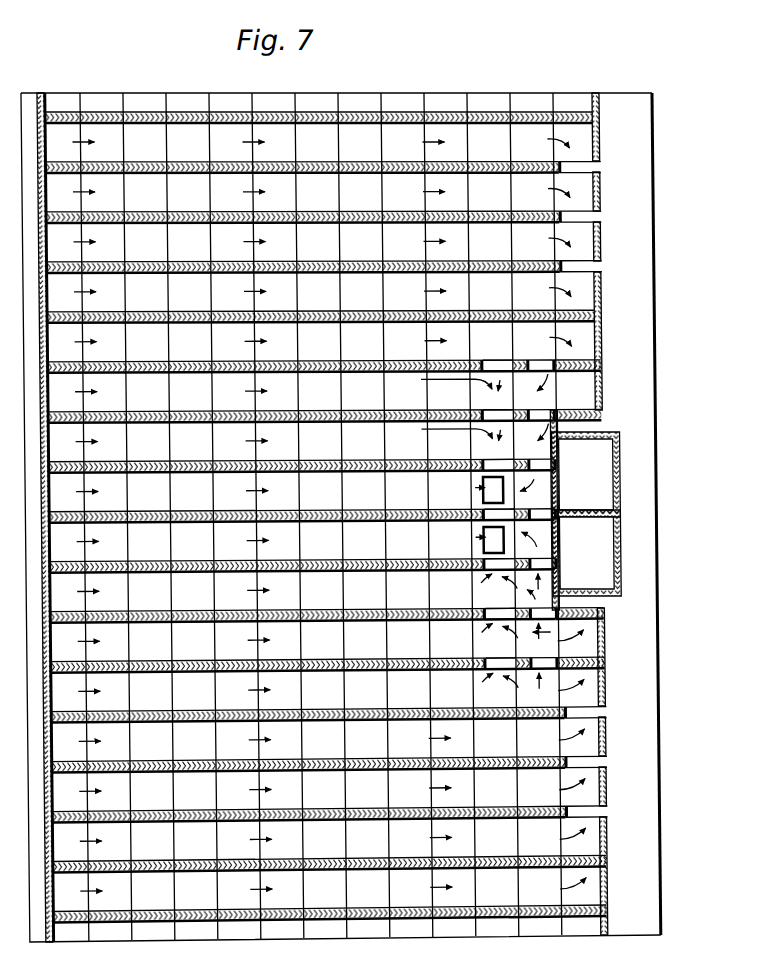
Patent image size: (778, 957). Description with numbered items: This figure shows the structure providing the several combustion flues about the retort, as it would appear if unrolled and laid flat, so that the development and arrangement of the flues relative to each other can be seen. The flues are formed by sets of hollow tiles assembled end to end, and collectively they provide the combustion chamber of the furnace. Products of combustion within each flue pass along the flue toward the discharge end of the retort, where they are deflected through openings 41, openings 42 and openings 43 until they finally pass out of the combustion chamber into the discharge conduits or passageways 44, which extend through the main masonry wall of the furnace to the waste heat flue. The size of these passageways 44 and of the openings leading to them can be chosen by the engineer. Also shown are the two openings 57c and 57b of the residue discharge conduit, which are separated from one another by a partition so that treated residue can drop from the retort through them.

The opening 41 is at (573, 265).
The opening 42 is at (524, 361).
The opening 43 is at (487, 367).
The discharge conduit or passageway 44 is at (548, 520).
The opening 57c is at (603, 478).
The opening 57b is at (603, 550).